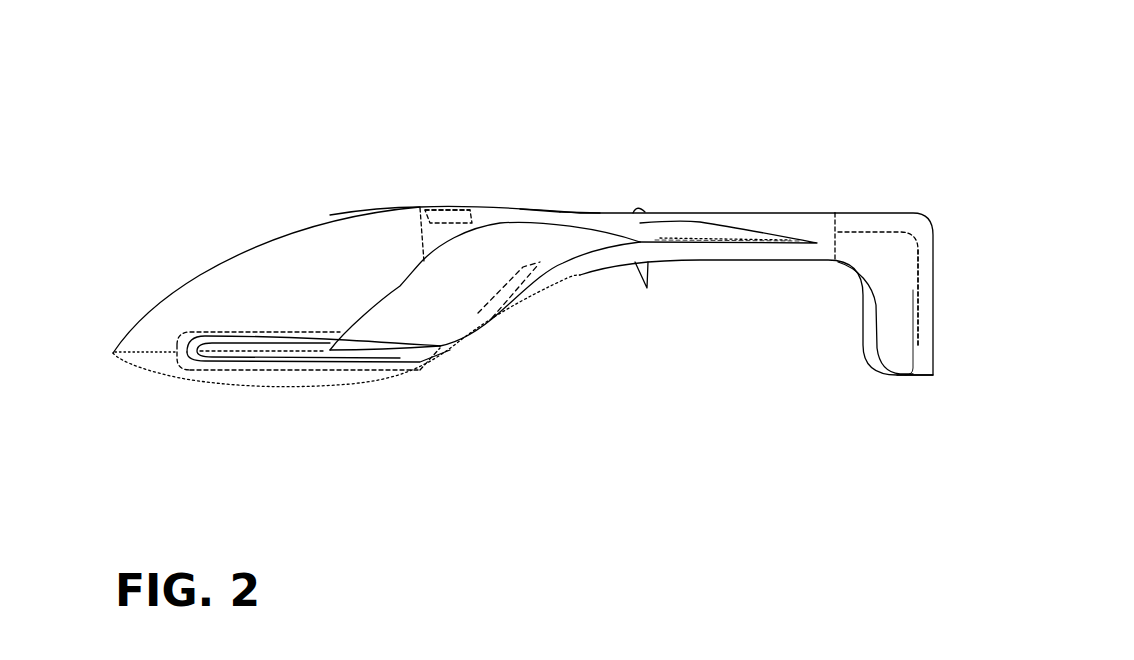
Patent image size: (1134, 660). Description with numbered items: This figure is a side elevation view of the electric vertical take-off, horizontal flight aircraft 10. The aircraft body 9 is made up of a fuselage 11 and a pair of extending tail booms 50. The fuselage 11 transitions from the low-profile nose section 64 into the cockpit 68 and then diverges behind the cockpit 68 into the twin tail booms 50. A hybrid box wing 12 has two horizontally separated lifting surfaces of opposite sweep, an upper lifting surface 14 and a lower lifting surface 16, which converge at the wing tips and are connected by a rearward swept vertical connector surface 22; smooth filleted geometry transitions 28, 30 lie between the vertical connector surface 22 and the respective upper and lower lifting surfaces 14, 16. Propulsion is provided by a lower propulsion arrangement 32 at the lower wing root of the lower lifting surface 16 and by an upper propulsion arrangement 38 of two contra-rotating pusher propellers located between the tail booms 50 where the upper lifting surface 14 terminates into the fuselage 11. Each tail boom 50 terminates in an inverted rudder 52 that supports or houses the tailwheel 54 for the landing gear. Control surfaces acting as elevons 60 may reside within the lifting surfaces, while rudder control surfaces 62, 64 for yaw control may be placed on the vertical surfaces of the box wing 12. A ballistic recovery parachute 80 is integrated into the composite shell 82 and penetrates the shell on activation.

The aircraft 10 is at (613, 112).
The aircraft body 9 is at (537, 210).
The fuselage 11 is at (410, 207).
The hybrid box wing 12 is at (572, 221).
The upper lifting surface 14 is at (685, 232).
The lower lifting surface 16 is at (263, 352).
The vertical connector surface 22 is at (480, 332).
The smooth filleted geometry transition 28 is at (520, 227).
The smooth filleted geometry transition 30 is at (440, 342).
The lower propulsion arrangement 32 is at (172, 357).
The upper propulsion arrangement 38 is at (645, 201).
The tail boom 50 is at (798, 212).
The inverted rudder 52 is at (862, 289).
The tailwheel 54 is at (912, 377).
The elevon 60 is at (705, 243).
The rudder control surface 62 is at (110, 354).
The rudder control surface 64 is at (937, 288).
The cockpit 68 is at (250, 267).
The ballistic recovery parachute 80 is at (437, 205).
The composite shell 82 is at (485, 207).